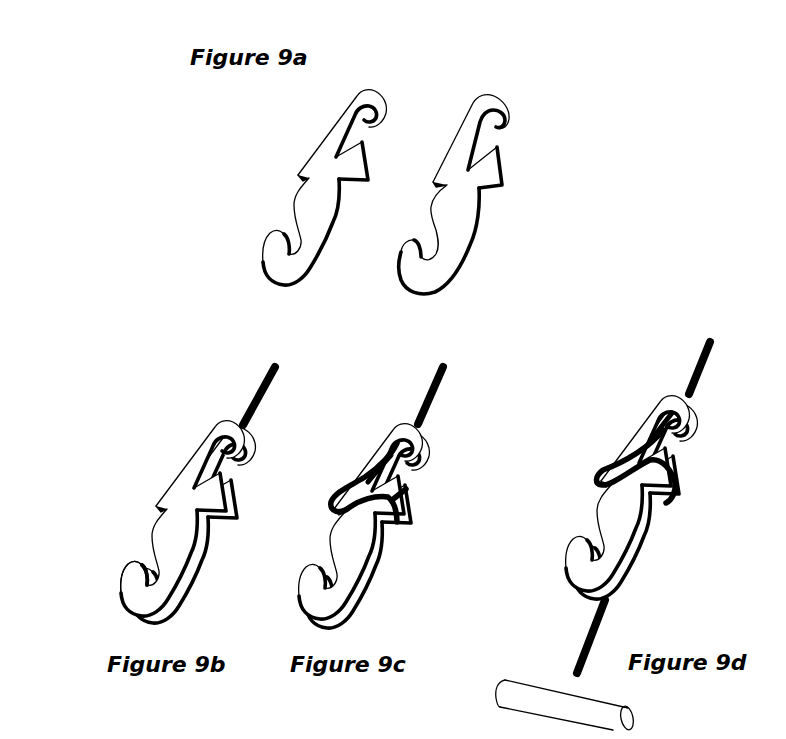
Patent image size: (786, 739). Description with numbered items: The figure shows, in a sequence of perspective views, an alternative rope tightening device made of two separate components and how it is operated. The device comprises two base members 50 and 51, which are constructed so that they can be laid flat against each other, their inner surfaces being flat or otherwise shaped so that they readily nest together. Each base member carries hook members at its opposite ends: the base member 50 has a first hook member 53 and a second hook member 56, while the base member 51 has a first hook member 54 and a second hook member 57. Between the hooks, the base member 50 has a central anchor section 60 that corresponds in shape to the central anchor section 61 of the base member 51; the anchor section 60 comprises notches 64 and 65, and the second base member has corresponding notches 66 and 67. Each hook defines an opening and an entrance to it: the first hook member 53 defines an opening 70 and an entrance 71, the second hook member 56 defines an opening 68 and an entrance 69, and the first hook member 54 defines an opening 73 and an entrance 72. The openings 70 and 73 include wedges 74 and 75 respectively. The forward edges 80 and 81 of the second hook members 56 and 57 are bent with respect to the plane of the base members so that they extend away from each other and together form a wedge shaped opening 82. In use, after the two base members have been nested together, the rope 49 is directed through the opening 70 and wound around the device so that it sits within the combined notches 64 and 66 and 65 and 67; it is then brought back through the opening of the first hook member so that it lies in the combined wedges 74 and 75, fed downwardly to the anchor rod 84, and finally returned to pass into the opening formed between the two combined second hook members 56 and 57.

In FIG. 9B, the rope 49 is at (262, 405).
In FIG. 9C, the rope 49 is at (435, 398).
In FIG. 9D, the rope 49 is at (698, 385).
In FIG. 9A, the base member 50 is at (323, 174).
In FIG. 9B, the base member 50 is at (143, 518).
In FIG. 9C, the base member 50 is at (361, 521).
In FIG. 9D, the base member 50 is at (628, 493).
In FIG. 9A, the base member 51 is at (481, 180).
In FIG. 9B, the base member 51 is at (210, 547).
In FIG. 9C, the base member 51 is at (368, 530).
In FIG. 9D, the base member 51 is at (636, 501).
In FIG. 9A, the first hook member 53 is at (394, 91).
In FIG. 9A, the first hook member 54 is at (517, 96).
In FIG. 9A, the second hook member 56 is at (303, 280).
In FIG. 9A, the second hook member 57 is at (440, 296).
In FIG. 9A, the central anchor section 60 is at (318, 162).
In FIG. 9A, the central anchor section 61 is at (514, 202).
In FIG. 9A, the notch 64 is at (309, 188).
In FIG. 9A, the notch 65 is at (348, 187).
In FIG. 9A, the notch 66 is at (433, 184).
In FIG. 9A, the notch 67 is at (482, 198).
In FIG. 9A, the opening 68 is at (257, 227).
In FIG. 9A, the entrance 69 is at (293, 228).
In FIG. 9A, the opening 70 is at (348, 110).
In FIG. 9A, the entrance 71 is at (378, 130).
In FIG. 9A, the entrance 72 is at (505, 133).
In FIG. 9A, the opening 73 is at (507, 110).
In FIG. 9A, the wedge 74 is at (309, 176).
In FIG. 9A, the wedge 75 is at (519, 190).
In FIG. 9B, the forward edge 80 is at (94, 540).
In FIG. 9B, the forward edge 81 is at (110, 536).
In FIG. 9B, the wedge shaped opening 82 is at (133, 570).
In FIG. 9D, the anchor rod 84 is at (538, 695).